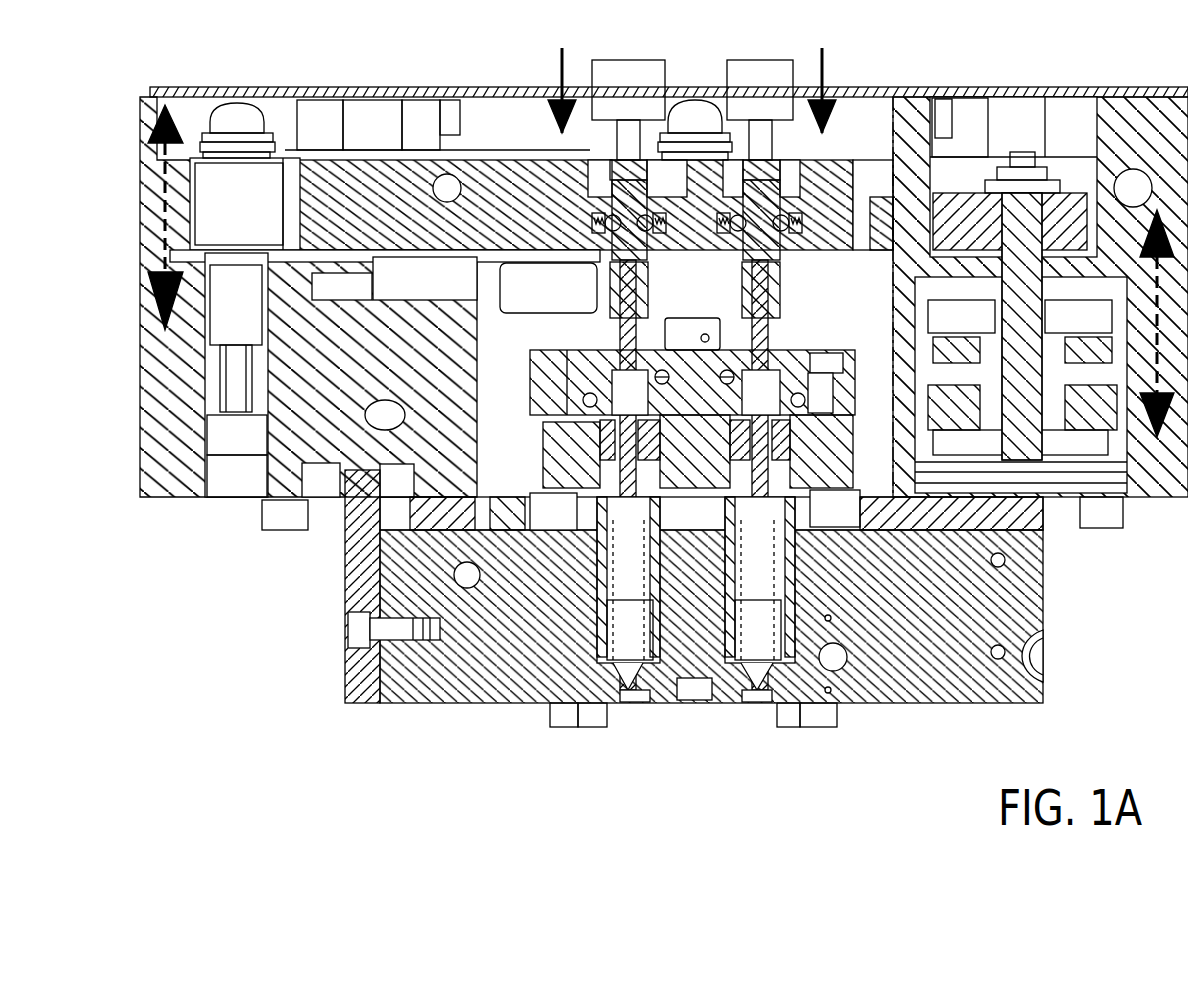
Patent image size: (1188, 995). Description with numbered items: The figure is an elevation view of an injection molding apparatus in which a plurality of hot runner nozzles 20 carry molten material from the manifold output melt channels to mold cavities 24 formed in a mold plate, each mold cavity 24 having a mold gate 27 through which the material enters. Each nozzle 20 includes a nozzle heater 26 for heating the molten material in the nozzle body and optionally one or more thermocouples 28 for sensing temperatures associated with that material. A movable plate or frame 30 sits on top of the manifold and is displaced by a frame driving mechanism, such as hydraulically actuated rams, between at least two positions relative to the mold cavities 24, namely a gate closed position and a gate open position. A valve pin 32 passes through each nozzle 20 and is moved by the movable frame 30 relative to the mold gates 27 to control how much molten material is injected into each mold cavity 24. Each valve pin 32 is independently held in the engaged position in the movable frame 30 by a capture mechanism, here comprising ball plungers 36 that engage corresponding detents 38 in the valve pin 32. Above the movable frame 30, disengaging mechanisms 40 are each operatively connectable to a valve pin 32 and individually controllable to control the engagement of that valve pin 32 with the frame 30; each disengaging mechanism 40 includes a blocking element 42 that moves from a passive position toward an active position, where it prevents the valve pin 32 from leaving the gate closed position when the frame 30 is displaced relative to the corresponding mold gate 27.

The hot runner nozzle 20 is at (592, 575).
The mold cavity 24 is at (630, 703).
The nozzle heater 26 is at (600, 578).
The mold gate 27 is at (637, 692).
The thermocouple 28 is at (847, 662).
The movable plate or frame 30 is at (567, 150).
The valve pin 32 is at (610, 330).
The ball plunger 36 is at (588, 203).
The detent 38 is at (668, 235).
The disengaging mechanism 40 is at (566, 92).
The blocking element 42 is at (630, 63).